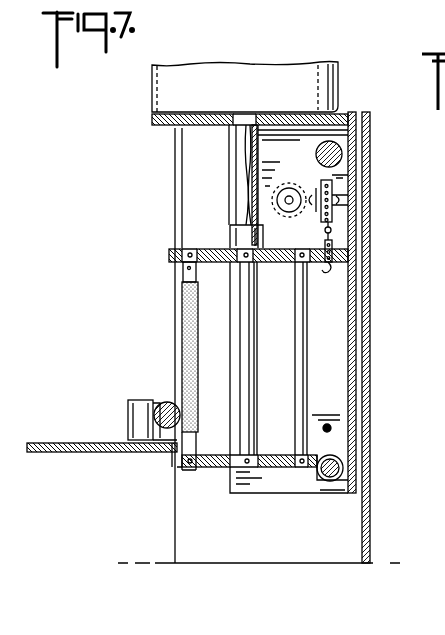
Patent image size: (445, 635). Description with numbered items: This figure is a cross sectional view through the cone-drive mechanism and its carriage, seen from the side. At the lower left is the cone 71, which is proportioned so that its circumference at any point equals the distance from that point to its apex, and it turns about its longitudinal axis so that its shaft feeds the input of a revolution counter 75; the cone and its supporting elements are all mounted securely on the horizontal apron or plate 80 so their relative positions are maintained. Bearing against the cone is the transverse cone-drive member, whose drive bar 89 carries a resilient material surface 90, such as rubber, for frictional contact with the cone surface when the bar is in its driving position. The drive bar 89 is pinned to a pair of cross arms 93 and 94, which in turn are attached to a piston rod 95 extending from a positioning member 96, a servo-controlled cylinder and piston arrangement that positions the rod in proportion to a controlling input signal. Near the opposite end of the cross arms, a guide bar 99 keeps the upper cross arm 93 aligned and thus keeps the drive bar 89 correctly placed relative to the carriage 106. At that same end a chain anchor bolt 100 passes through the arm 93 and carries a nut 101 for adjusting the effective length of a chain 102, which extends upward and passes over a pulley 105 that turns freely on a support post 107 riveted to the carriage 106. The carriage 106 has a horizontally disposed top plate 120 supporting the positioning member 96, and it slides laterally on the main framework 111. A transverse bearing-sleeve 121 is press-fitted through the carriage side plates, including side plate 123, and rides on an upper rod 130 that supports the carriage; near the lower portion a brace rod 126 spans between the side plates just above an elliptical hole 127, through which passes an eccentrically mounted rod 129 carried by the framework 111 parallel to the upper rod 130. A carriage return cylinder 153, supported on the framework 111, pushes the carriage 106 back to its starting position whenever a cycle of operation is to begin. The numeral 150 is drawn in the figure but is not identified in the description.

The cone 71 is at (167, 400).
The revolution counter 75 is at (133, 413).
The horizontal apron or plate 80 is at (88, 452).
The drive bar 89 is at (185, 272).
The resilient material surface 90 is at (187, 298).
The cross arm 93 is at (212, 248).
The cross arm 94 is at (213, 468).
The piston rod 95 is at (240, 186).
The positioning member 96 is at (245, 72).
The guide bar 99 is at (307, 380).
The chain anchor bolt 100 is at (348, 252).
The nut 101 is at (331, 262).
The chain 102 is at (340, 238).
The pulley 105 is at (318, 192).
The carriage 106 is at (356, 173).
The support post 107 is at (335, 222).
The framework 111 is at (372, 284).
The top plate 120 is at (195, 112).
The transverse bearing-sleeve 121 is at (353, 150).
The side plate 123 is at (246, 145).
The brace rod 126 is at (330, 426).
The elliptical hole 127 is at (340, 460).
The eccentrically mounted rod 129 is at (318, 478).
The upper rod 130 is at (341, 142).
The guide strip 150 is at (248, 168).
The carriage return cylinder 153 is at (271, 216).